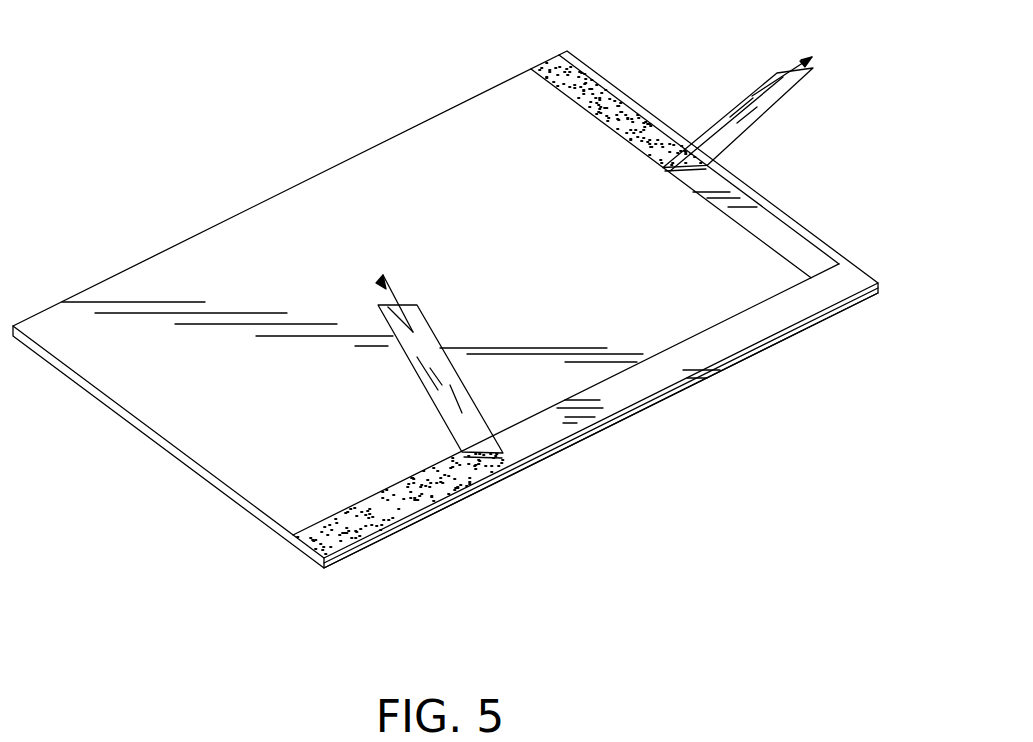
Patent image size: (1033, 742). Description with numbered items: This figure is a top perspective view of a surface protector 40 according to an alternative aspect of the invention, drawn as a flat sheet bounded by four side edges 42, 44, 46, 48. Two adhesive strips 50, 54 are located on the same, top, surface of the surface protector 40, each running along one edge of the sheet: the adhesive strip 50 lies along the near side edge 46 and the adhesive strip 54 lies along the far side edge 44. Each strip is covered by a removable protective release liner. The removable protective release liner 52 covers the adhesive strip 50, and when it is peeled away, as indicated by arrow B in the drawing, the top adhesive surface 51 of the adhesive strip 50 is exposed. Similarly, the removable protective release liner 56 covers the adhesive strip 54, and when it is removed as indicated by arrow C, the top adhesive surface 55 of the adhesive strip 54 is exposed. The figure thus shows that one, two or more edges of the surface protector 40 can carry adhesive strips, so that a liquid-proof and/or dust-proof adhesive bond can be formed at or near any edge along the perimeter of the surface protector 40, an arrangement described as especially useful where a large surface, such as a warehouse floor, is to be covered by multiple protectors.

The surface protector 40 is at (176, 178).
The side edge 42 is at (445, 110).
The side edge 44 is at (580, 54).
The side edge 46 is at (562, 452).
The side edge 48 is at (123, 428).
The adhesive strip 50 is at (792, 318).
The top adhesive surface 51 is at (382, 498).
The removable protective release liner 52 is at (722, 337).
The adhesive strip 54 is at (812, 237).
The top adhesive surface 55 is at (626, 128).
The removable protective release liner 56 is at (770, 108).